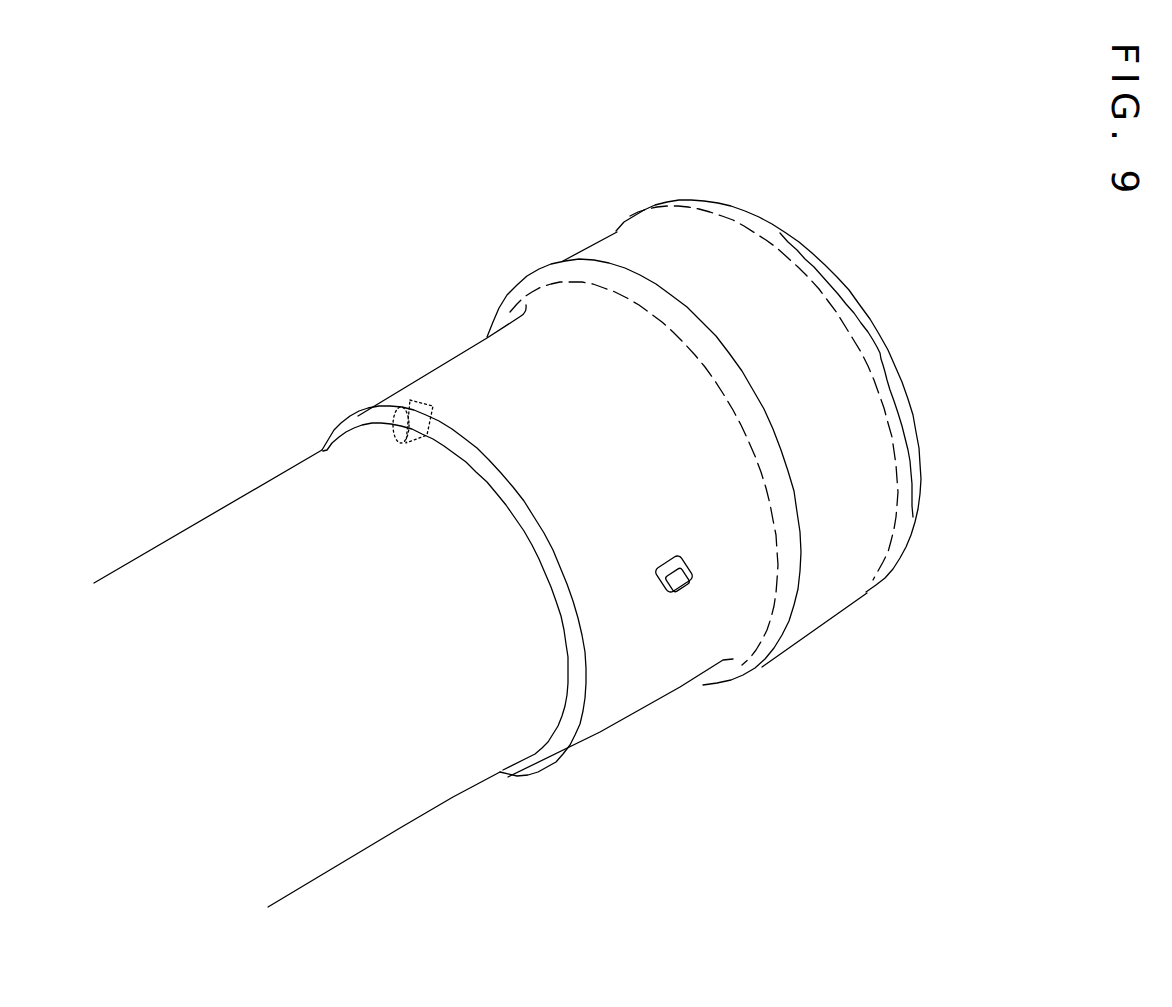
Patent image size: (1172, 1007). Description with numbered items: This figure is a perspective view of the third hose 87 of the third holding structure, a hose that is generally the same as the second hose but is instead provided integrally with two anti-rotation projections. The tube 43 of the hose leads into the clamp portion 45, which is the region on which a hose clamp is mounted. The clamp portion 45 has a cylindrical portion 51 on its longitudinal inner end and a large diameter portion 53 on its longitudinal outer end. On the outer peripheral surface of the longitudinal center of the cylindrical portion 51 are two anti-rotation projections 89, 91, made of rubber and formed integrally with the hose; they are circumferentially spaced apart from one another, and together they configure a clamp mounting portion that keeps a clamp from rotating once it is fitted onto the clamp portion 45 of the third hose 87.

The third hose 87 is at (232, 283).
The tube 43 is at (460, 798).
The cylindrical portion 51 is at (617, 730).
The clamp portion 45 is at (777, 668).
The large diameter portion 53 is at (825, 622).
The anti-rotation projection 89 is at (677, 575).
The anti-rotation projection 91 is at (407, 400).